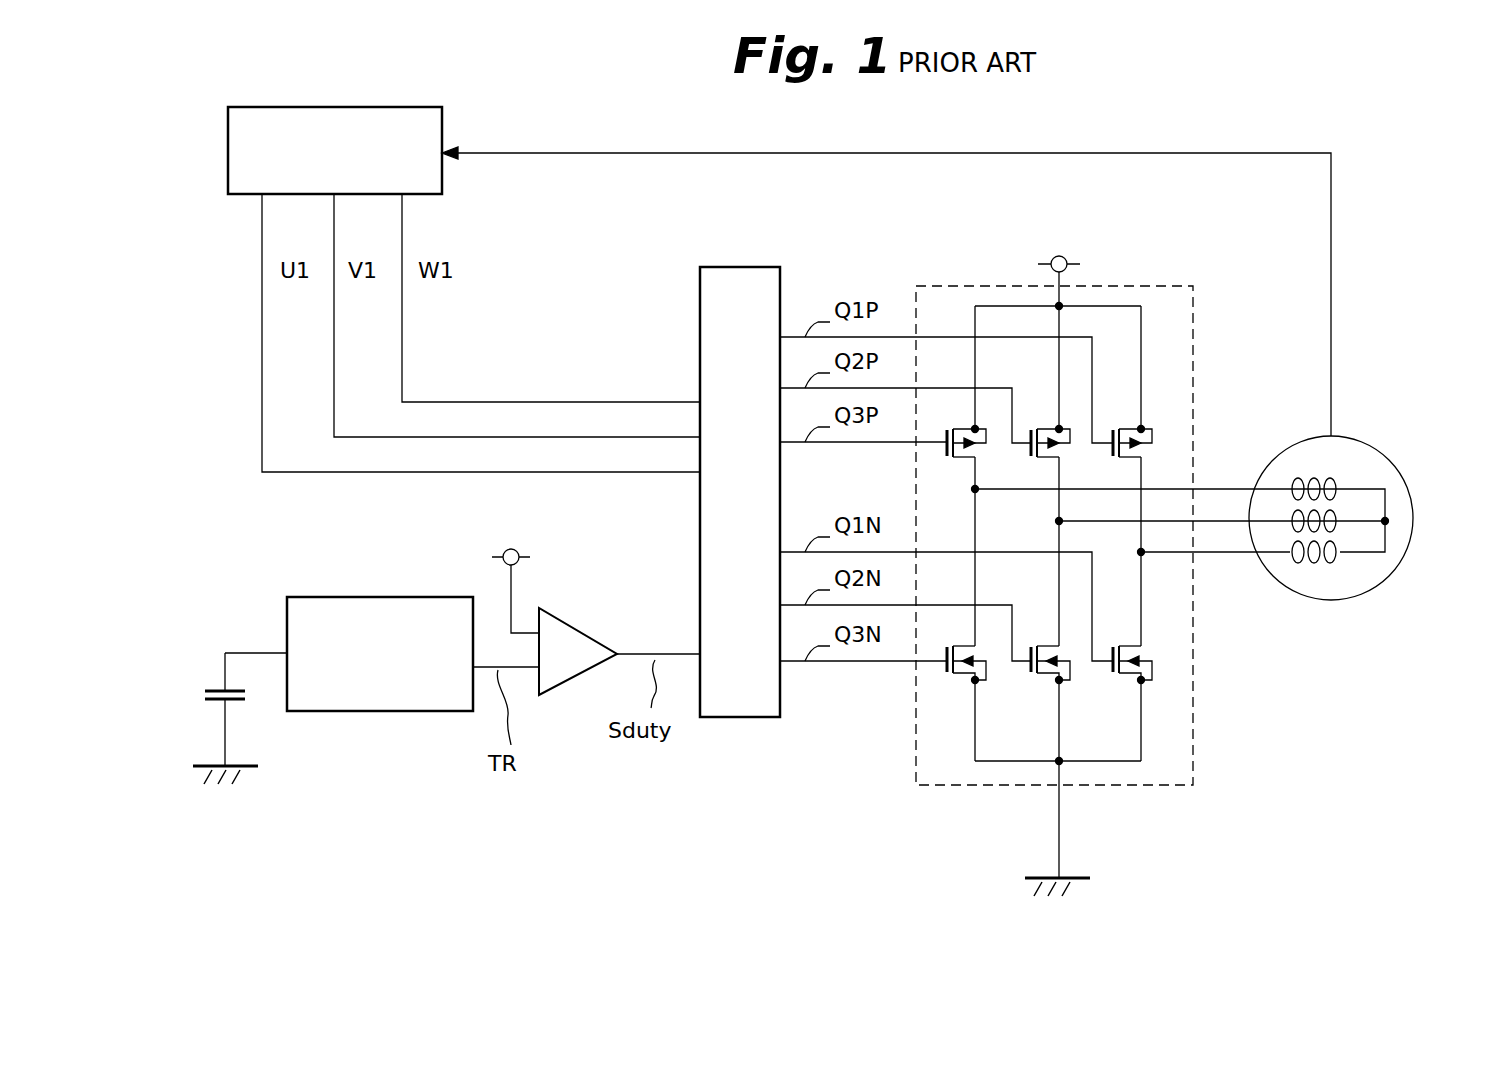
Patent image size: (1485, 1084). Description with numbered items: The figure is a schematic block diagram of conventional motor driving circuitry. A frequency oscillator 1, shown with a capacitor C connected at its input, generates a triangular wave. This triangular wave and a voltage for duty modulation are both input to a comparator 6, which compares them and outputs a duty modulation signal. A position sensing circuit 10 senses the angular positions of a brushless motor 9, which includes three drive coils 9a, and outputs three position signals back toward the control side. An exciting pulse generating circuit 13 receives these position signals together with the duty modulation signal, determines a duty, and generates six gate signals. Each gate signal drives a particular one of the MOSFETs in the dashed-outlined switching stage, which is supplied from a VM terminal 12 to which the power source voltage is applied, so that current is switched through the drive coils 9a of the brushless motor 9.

The frequency oscillator 1 is at (365, 597).
The comparator 6 is at (565, 622).
The brushless motor 9 is at (1352, 522).
The drive coils 9a is at (1318, 474).
The position sensing circuit 10 is at (442, 129).
The VM terminal 12 is at (1066, 257).
The exciting pulse generating circuit 13 is at (742, 267).
The capacitor C is at (236, 706).